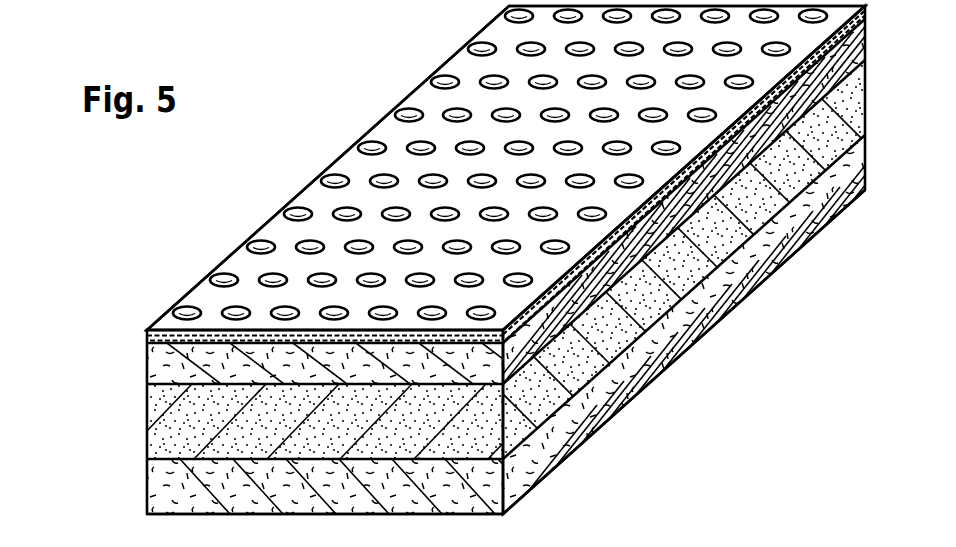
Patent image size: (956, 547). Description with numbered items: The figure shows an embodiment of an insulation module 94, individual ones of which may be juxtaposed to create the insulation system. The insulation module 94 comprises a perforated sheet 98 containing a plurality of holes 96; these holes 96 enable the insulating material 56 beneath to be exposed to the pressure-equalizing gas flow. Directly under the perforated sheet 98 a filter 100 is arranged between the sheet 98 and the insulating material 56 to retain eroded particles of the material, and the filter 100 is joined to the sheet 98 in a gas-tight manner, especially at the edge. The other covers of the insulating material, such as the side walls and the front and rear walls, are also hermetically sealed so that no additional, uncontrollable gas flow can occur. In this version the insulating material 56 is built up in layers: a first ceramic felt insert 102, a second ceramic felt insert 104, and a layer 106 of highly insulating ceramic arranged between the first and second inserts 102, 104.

The insulation module 94 is at (372, 94).
The holes 96 is at (380, 180).
The perforated sheet 98 is at (242, 265).
The filter 100 is at (145, 341).
The first ceramic felt insert 102 is at (147, 363).
The insulating material 56 is at (138, 410).
The layer of highly insulating ceramic 106 is at (145, 438).
The second ceramic felt insert 104 is at (145, 493).